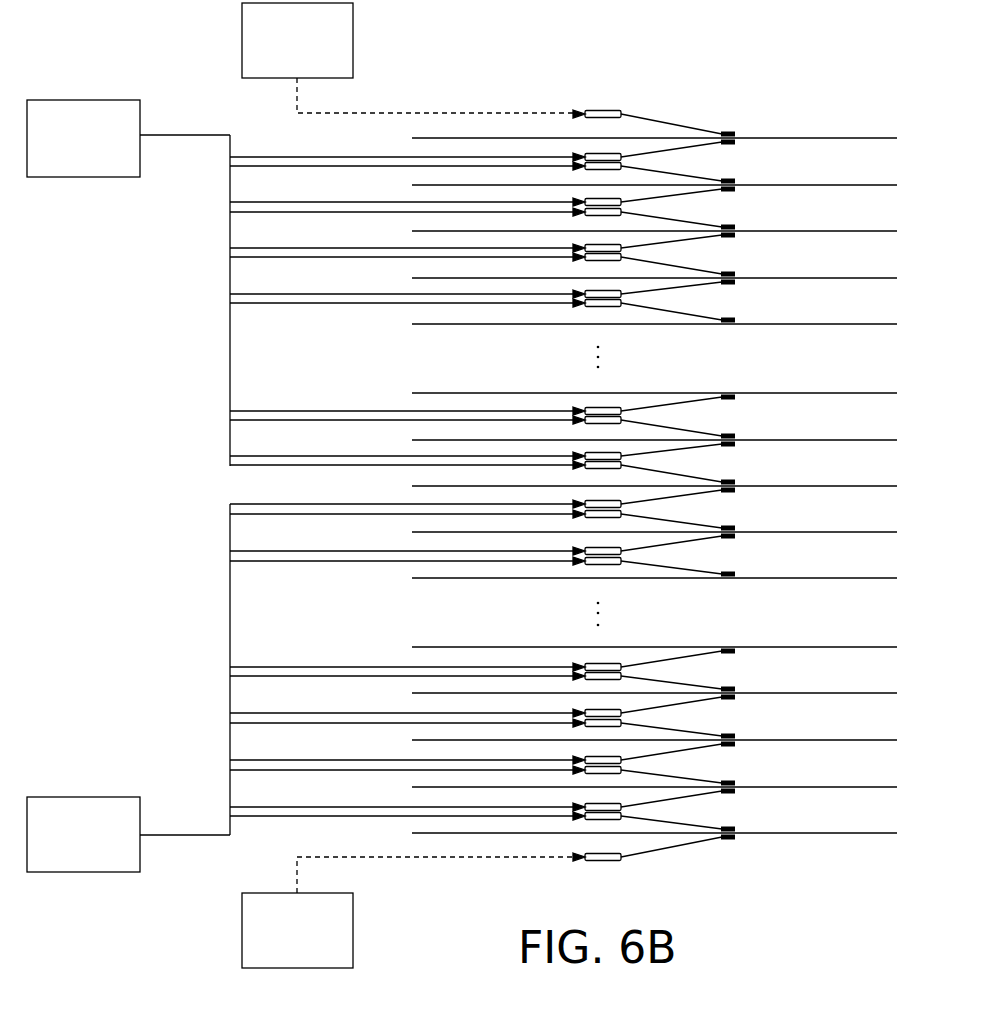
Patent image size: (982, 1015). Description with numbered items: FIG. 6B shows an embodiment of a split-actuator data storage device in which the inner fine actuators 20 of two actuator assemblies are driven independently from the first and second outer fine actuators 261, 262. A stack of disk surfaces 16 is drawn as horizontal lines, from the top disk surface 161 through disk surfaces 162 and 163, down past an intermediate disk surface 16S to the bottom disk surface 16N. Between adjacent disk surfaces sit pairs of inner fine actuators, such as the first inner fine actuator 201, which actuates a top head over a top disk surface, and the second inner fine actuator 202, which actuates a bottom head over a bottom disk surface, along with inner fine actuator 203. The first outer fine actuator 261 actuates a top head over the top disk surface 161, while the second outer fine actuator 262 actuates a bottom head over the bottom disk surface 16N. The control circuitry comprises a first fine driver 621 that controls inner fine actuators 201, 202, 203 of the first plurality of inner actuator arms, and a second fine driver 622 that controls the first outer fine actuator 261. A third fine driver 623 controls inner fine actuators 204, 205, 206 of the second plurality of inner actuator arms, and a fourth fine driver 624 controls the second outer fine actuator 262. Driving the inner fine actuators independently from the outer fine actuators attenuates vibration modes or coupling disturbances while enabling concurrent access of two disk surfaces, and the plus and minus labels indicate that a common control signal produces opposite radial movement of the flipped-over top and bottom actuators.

The disk surface 16 is at (654, 532).
The top disk surface 161 is at (842, 137).
The disk surface 162 is at (842, 184).
The disk surface 163 is at (842, 230).
The disk surface 16S is at (845, 485).
The bottom disk surface 16N is at (850, 835).
The inner fine actuator 20 is at (482, 487).
The first inner fine actuator 201 is at (622, 165).
The second inner fine actuator 202 is at (617, 155).
The inner fine actuator 203 is at (620, 202).
The first inner fine actuator 204 is at (615, 817).
The second inner fine actuator 205 is at (622, 808).
The inner fine actuator 206 is at (620, 771).
The first outer fine actuator 261 is at (604, 110).
The second outer fine actuator 262 is at (602, 862).
The first fine driver 621 is at (82, 100).
The second fine driver 622 is at (242, 40).
The third fine driver 623 is at (83, 872).
The fourth fine driver 624 is at (242, 929).